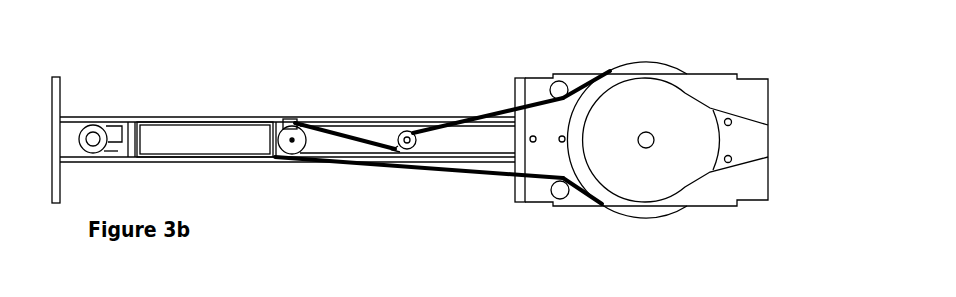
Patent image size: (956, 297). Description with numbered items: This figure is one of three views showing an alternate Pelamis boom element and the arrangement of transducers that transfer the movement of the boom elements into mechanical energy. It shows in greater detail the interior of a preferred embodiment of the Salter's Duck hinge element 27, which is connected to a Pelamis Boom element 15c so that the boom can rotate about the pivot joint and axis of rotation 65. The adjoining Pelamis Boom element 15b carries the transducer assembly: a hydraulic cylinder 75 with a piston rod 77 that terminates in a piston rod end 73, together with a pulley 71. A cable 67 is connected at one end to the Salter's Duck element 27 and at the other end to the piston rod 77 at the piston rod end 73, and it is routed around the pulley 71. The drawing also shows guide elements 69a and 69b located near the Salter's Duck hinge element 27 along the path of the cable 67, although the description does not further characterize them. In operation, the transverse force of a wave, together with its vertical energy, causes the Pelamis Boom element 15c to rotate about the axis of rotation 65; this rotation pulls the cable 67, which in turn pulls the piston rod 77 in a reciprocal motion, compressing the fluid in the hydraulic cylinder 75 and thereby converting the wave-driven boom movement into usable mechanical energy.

The Pelamis Boom element 15b is at (353, 102).
The Pelamis Boom element 15c is at (765, 75).
The Salter's Duck hinge element 27 is at (667, 218).
The axis of rotation 65 is at (647, 136).
The cable 67 is at (470, 175).
The lower cable guide 69a is at (600, 203).
The upper cable guide 69b is at (610, 70).
The pulley 71 is at (290, 142).
The piston rod end 73 is at (410, 136).
The hydraulic cylinder 75 is at (198, 140).
The piston rod 77 is at (336, 143).